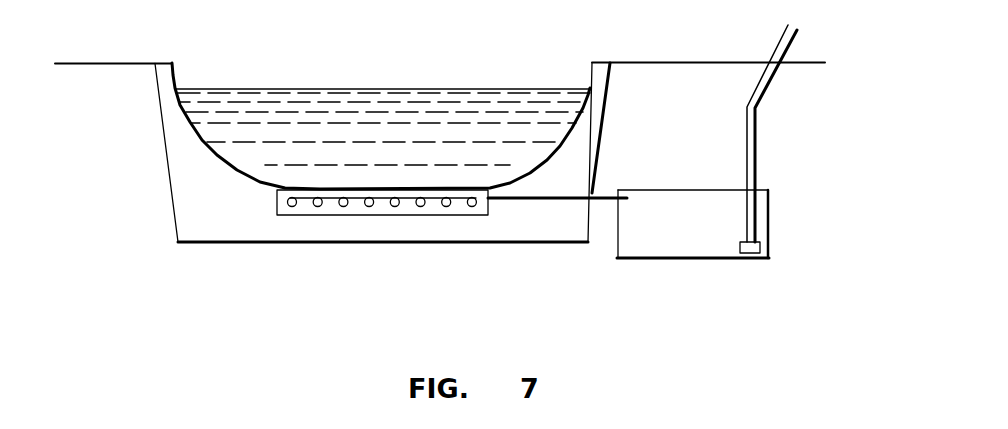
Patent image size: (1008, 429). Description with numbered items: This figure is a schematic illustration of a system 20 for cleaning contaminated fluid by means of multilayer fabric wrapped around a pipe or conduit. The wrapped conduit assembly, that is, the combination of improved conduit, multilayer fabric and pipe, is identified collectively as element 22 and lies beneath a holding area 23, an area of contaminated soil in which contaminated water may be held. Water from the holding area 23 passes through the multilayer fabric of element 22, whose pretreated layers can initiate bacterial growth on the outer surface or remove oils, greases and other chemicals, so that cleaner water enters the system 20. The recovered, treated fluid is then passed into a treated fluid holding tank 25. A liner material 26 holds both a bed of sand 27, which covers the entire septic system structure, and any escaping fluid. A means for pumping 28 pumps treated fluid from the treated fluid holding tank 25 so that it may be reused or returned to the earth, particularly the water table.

The system 20 is at (834, 185).
The combination of improved conduit, multilayer fabric and pipe 22 is at (317, 207).
The holding area 23 is at (210, 134).
The treated fluid holding tank 25 is at (683, 248).
The liner material 26 is at (523, 242).
The bed of sand 27 is at (482, 210).
The means for pumping 28 is at (763, 247).